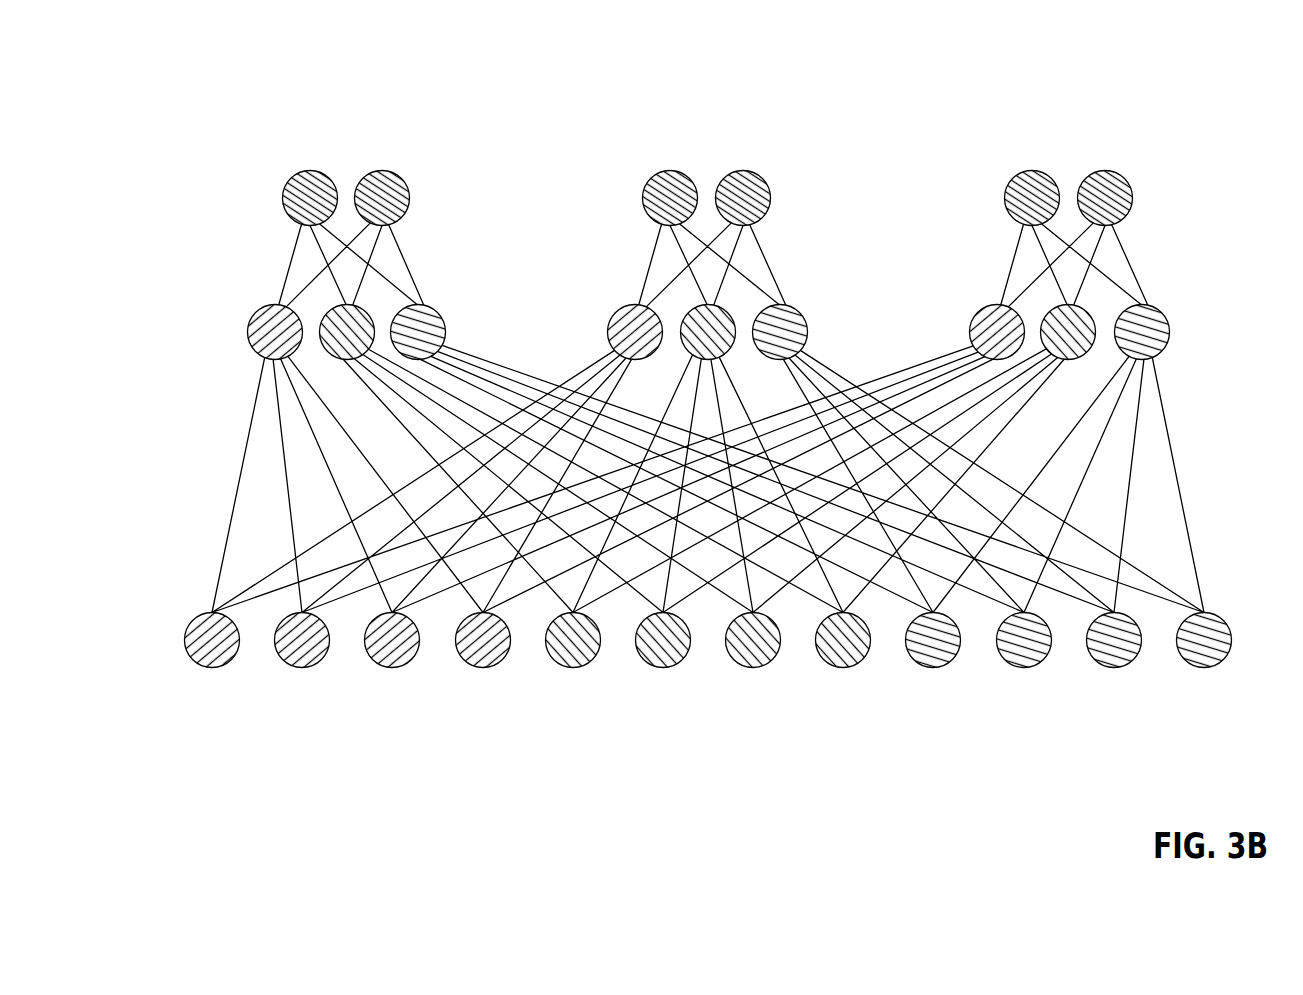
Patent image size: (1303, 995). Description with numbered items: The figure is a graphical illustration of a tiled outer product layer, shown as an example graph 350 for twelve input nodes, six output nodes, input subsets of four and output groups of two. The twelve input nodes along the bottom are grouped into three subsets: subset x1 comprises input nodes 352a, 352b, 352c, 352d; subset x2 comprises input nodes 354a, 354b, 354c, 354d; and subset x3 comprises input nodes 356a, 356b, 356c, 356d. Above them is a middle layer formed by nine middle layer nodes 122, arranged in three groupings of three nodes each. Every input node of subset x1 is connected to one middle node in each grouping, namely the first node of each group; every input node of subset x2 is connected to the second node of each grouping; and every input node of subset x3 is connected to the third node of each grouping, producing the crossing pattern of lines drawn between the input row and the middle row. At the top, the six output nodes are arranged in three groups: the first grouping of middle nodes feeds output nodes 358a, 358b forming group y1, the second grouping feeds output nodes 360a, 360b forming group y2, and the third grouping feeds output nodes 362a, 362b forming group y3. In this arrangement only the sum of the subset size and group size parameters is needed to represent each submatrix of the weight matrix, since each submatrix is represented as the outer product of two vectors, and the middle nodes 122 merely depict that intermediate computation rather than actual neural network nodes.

The graph 350 is at (229, 80).
The output node 358a is at (282, 199).
The output node 358b is at (410, 199).
The output node 360a is at (642, 199).
The output node 360b is at (771, 199).
The output node 362a is at (1004, 199).
The output node 362b is at (1133, 199).
The middle layer node 122 is at (248, 331).
The input node 352a is at (212, 668).
The input node 352b is at (302, 668).
The input node 352c is at (392, 668).
The input node 352d is at (483, 668).
The input node 354a is at (573, 668).
The input node 354b is at (663, 668).
The input node 354c is at (753, 668).
The input node 354d is at (843, 668).
The input node 356a is at (933, 668).
The input node 356b is at (1024, 668).
The input node 356c is at (1114, 668).
The input node 356d is at (1204, 668).